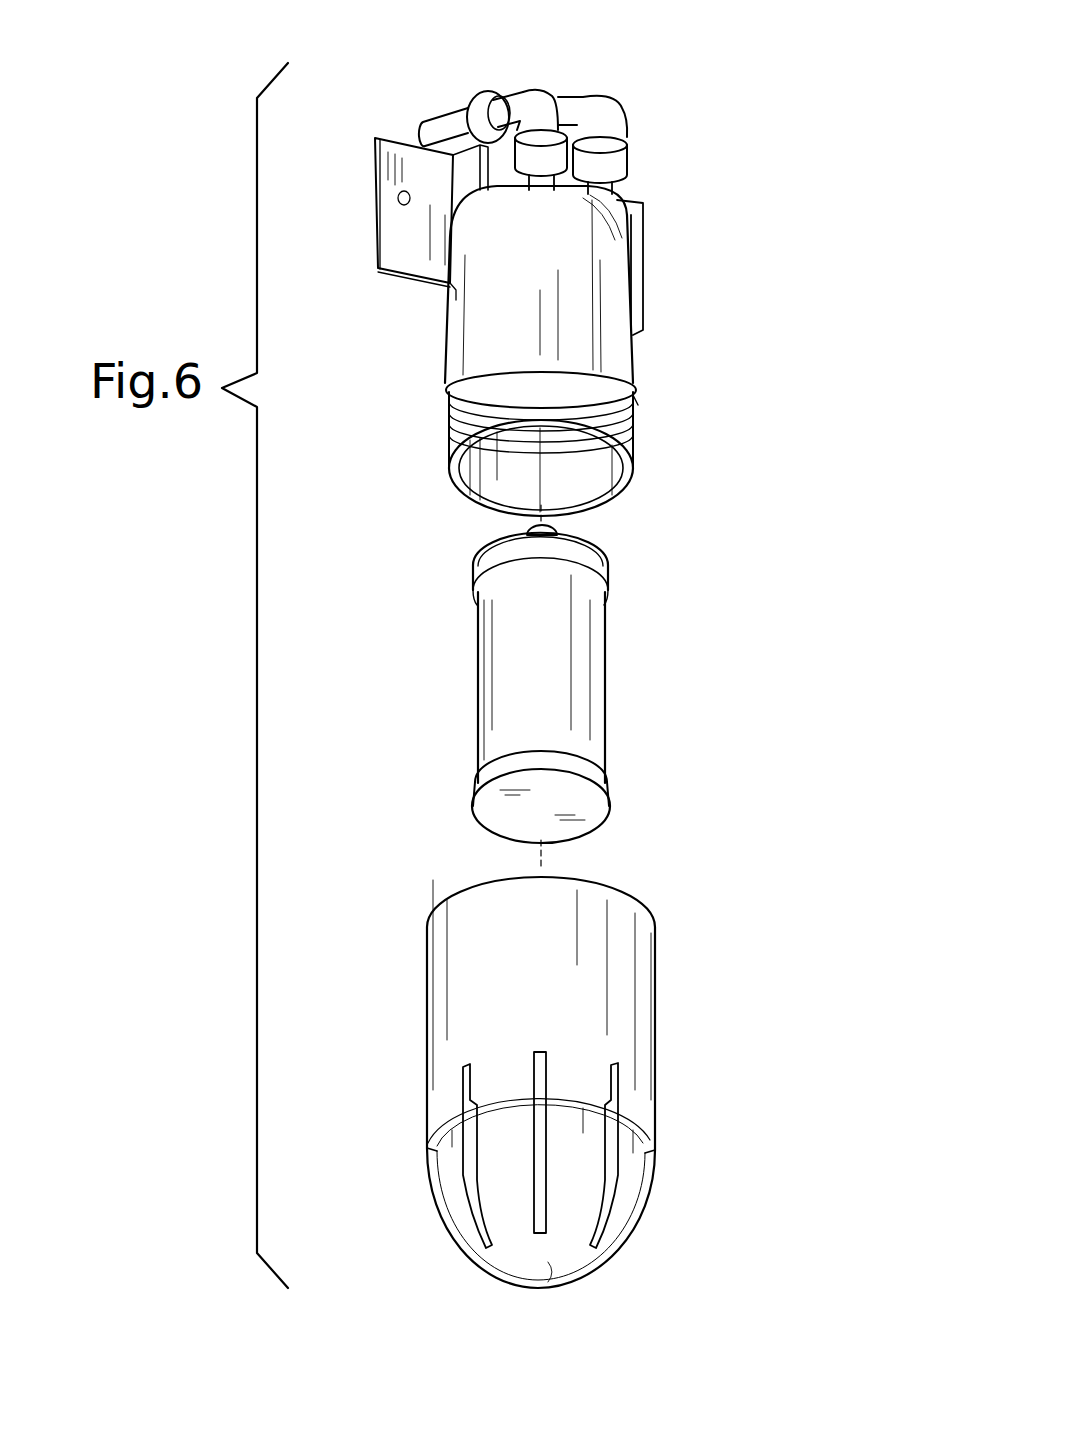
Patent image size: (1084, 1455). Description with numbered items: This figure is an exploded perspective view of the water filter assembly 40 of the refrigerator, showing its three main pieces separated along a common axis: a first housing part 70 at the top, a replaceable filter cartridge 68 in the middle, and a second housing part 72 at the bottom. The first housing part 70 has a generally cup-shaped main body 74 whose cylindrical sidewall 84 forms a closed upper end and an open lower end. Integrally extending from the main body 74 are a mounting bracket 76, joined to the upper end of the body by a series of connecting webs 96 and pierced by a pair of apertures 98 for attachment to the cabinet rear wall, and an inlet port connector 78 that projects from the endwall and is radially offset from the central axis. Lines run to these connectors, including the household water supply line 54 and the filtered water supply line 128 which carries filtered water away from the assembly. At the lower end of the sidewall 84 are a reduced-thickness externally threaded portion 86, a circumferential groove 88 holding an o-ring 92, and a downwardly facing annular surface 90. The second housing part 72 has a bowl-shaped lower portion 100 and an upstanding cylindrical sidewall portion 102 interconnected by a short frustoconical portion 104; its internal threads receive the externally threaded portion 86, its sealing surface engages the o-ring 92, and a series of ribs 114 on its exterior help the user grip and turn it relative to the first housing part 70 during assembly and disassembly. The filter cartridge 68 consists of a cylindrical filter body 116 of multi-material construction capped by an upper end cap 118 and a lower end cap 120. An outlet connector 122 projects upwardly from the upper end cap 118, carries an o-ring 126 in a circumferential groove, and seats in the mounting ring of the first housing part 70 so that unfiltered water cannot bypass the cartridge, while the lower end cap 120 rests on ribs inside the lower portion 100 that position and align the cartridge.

The water filter assembly 40 is at (645, 119).
The household water supply line 54 is at (533, 165).
The replaceable filter cartridge 68 is at (630, 686).
The first housing part 70 is at (652, 372).
The second housing part 72 is at (665, 1038).
The main body 74 is at (632, 273).
The mounting bracket 76 is at (395, 258).
The inlet port connector 78 is at (625, 183).
The cylindrical sidewall 84 is at (570, 323).
The externally threaded portion 86 is at (455, 442).
The circumferential groove 88 is at (467, 397).
The downwardly facing annular surface 90 is at (443, 423).
The o-ring 92 is at (640, 406).
The connecting webs 96 is at (457, 198).
The apertures 98 is at (400, 194).
The bowl-shaped lower portion 100 is at (487, 1260).
The cylindrical sidewall portion 102 is at (433, 1025).
The frustoconical portion 104 is at (637, 1128).
The ribs 114 is at (427, 1207).
The cylindrical filter body 116 is at (487, 703).
The upper end cap 118 is at (473, 572).
The lower end cap 120 is at (610, 802).
The outlet connector 122 is at (558, 523).
The o-ring 126 is at (527, 531).
The filtered water supply line 128 is at (432, 120).